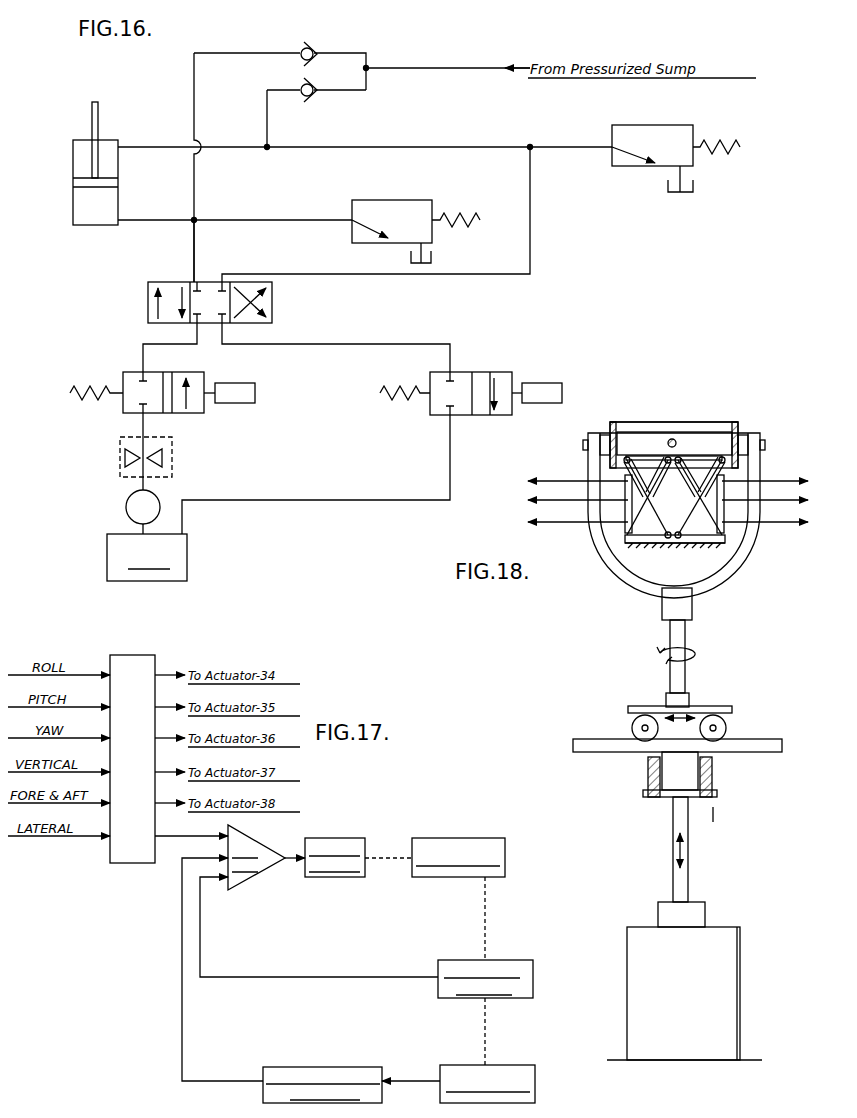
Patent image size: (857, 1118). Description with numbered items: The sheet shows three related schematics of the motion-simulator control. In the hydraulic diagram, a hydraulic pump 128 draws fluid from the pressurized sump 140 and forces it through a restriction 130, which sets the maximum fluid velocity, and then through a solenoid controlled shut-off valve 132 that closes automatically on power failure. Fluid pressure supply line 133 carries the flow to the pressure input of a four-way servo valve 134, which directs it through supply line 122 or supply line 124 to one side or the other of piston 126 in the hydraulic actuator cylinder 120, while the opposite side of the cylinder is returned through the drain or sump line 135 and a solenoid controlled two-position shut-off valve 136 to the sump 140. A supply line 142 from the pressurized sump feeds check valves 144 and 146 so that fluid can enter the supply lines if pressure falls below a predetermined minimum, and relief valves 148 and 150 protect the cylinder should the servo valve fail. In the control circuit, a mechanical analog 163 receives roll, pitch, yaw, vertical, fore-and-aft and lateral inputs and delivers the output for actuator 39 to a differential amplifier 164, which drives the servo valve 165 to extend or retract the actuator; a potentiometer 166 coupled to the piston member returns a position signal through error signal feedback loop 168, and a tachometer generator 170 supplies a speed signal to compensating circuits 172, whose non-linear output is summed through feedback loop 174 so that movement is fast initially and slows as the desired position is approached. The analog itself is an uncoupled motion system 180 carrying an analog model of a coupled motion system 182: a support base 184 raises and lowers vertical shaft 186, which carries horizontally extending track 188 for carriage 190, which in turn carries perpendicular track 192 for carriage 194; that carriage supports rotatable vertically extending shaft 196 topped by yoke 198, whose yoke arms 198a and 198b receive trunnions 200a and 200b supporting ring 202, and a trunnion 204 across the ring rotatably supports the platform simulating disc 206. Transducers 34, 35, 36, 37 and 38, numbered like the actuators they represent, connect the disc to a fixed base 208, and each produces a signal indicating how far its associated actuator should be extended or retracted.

In FIG. 16, the hydraulic actuator cylinder 120 is at (73, 149).
In FIG. 16, the piston 126 is at (82, 184).
In FIG. 16, the supply line 124 is at (194, 242).
In FIG. 16, the check valve 146 is at (300, 50).
In FIG. 16, the check valve 144 is at (302, 98).
In FIG. 16, the supply line 142 is at (437, 66).
In FIG. 16, the relief valve 148 is at (652, 125).
In FIG. 16, the relief valve 150 is at (395, 200).
In FIG. 16, the sump 140 is at (690, 194).
In FIG. 16, the supply line 122 is at (528, 150).
In FIG. 16, the four-way servo valve 134 is at (272, 320).
In FIG. 16, the fluid pressure supply line 133 is at (143, 355).
In FIG. 16, the solenoid controlled shut-off valve 132 is at (193, 373).
In FIG. 16, the drain or sump line 135 is at (410, 331).
In FIG. 16, the solenoid controlled two-position shut-off valve 136 is at (490, 370).
In FIG. 16, the restriction 130 is at (172, 462).
In FIG. 16, the hydraulic pump 128 is at (126, 507).
In FIG. 17, the mechanical analog 163 is at (146, 660).
In FIG. 17, the differential amplifier 164 is at (251, 884).
In FIG. 17, the servo valve 165 is at (343, 838).
In FIG. 17, the actuator 39 is at (450, 838).
In FIG. 18, the actuator 39 is at (632, 510).
In FIG. 17, the potentiometer 166 is at (510, 960).
In FIG. 17, the error signal feedback loop 168 is at (352, 968).
In FIG. 17, the tachometer generator 170 is at (512, 1065).
In FIG. 17, the compensating circuits 172 is at (322, 1067).
In FIG. 17, the feedback loop 174 is at (182, 1034).
In FIG. 18, the yoke 198 is at (798, 584).
In FIG. 18, the yoke arm 198a is at (590, 460).
In FIG. 18, the yoke arm 198b is at (785, 468).
In FIG. 18, the platform simulating disc 206 is at (638, 437).
In FIG. 18, the ring 202 is at (738, 425).
In FIG. 18, the trunnion 204 is at (676, 440).
In FIG. 18, the trunnion 200a is at (583, 447).
In FIG. 18, the trunnion 200b is at (765, 446).
In FIG. 18, the transducer 38 is at (655, 472).
In FIG. 18, the transducer 37 is at (694, 490).
In FIG. 18, the transducer 35 is at (697, 503).
In FIG. 18, the transducer 34 is at (654, 540).
In FIG. 18, the transducer 36 is at (726, 528).
In FIG. 18, the analog model of a coupled motion system 182 is at (622, 530).
In FIG. 18, the base 208 is at (702, 543).
In FIG. 18, the vertically extending shaft 196 is at (686, 683).
In FIG. 18, the uncoupled motion system 180 is at (658, 702).
In FIG. 18, the carriage 194 is at (752, 702).
In FIG. 18, the horizontally extending track 192 is at (790, 728).
In FIG. 18, the carriage 190 is at (658, 766).
In FIG. 18, the horizontally extending track 188 is at (665, 797).
In FIG. 18, the vertical shaft 186 is at (688, 873).
In FIG. 18, the support base 184 is at (727, 988).